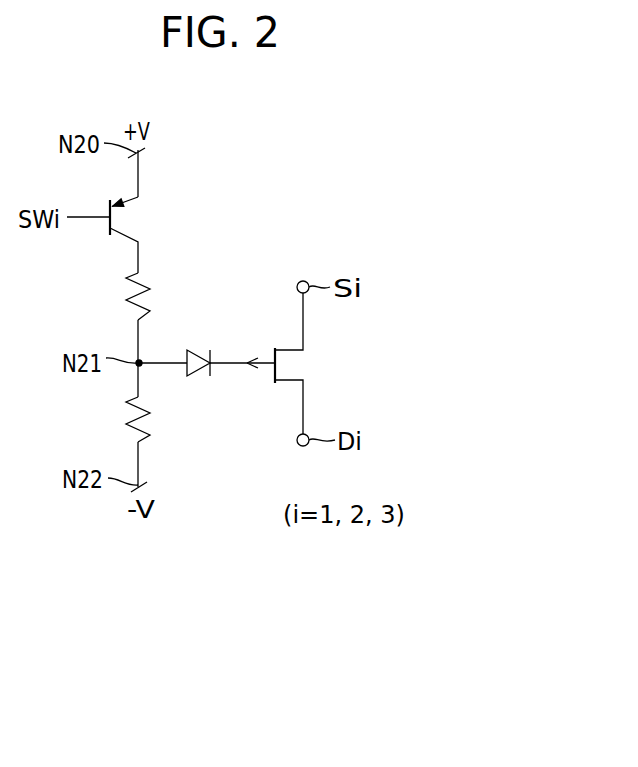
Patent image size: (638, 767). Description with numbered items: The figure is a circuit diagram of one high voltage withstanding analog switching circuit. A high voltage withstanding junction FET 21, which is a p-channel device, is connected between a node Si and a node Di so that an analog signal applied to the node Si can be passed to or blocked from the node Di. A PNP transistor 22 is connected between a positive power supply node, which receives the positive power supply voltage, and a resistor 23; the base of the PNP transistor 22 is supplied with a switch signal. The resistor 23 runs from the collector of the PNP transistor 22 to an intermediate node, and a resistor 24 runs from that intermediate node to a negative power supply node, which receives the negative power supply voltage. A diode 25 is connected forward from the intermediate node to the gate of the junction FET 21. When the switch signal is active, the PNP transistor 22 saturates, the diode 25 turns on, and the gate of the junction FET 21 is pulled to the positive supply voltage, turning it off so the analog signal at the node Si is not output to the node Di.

The high voltage withstanding junction FET 21 is at (297, 370).
The PNP transistor 22 is at (126, 229).
The resistor 23 is at (143, 282).
The resistor 24 is at (152, 417).
The diode 25 is at (200, 350).